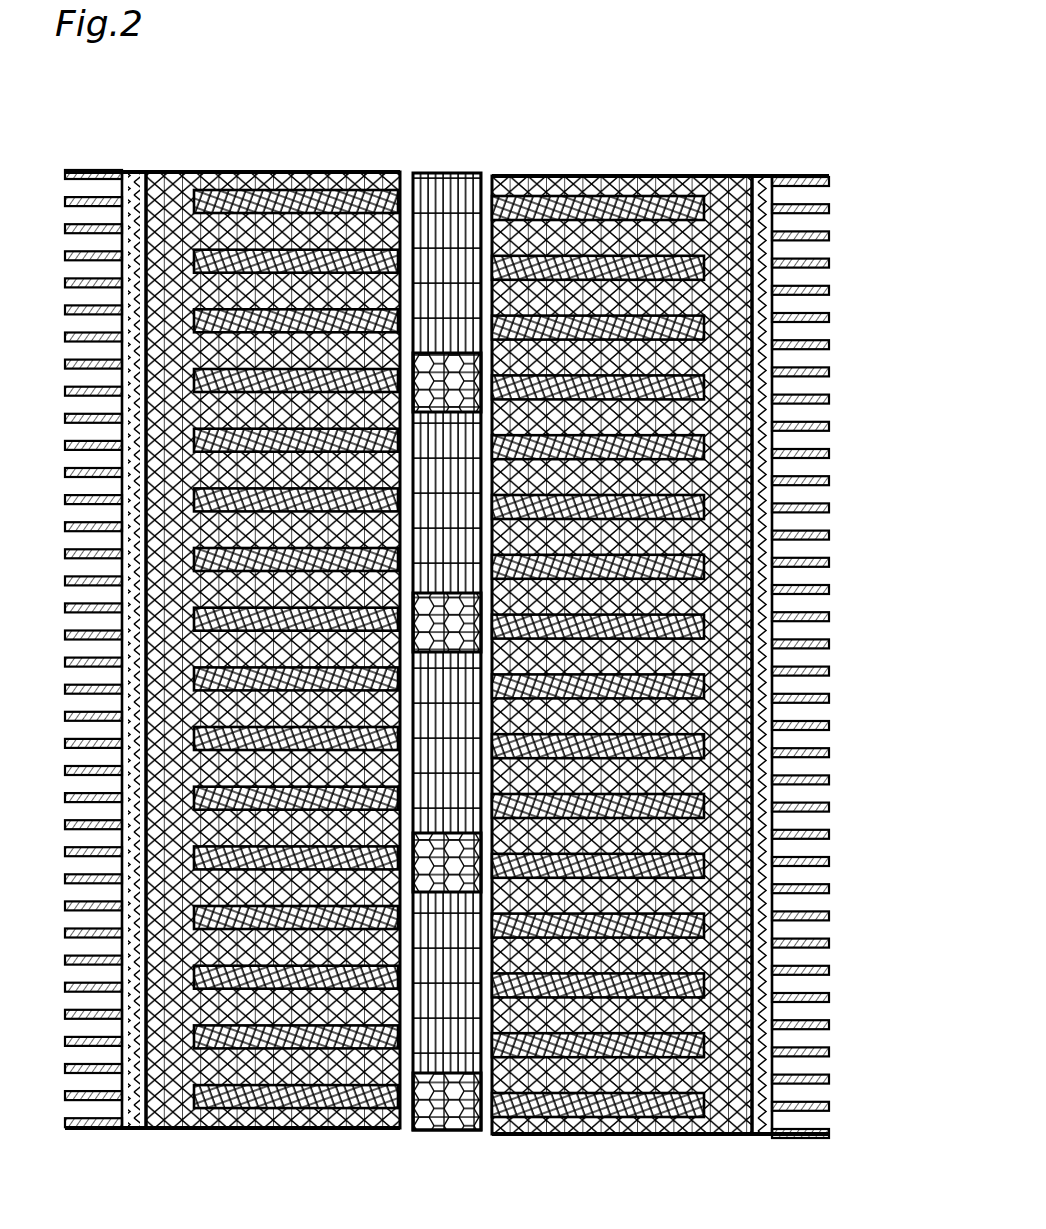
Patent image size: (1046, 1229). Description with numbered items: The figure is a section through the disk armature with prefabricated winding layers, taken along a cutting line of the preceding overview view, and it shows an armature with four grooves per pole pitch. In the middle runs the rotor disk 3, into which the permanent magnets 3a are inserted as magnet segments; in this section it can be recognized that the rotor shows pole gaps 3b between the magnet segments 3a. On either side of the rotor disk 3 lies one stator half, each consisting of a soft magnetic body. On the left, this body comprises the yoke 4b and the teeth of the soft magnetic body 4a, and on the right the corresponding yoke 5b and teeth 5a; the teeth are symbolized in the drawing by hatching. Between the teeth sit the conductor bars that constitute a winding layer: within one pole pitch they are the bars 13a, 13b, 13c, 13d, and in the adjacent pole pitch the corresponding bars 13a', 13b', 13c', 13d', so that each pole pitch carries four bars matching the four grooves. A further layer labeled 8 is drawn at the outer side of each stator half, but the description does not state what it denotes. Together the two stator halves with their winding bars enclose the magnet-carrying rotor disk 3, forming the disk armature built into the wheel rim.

The rotor disk 3 is at (446, 162).
The permanent magnets 3a is at (441, 208).
The pole gaps 3b is at (438, 1132).
The teeth of the soft magnetic body 4a is at (300, 173).
The yoke 4b is at (190, 173).
The teeth of the soft magnetic body 5a is at (583, 175).
The yoke 5b is at (753, 176).
The plate 8 is at (141, 173).
The bar 13a is at (840, 334).
The bar 13b is at (841, 395).
The bar 13c is at (839, 457).
The bar 13d is at (841, 518).
The bar of the adjacent pole pitch 13a' is at (845, 580).
The bar of the adjacent pole pitch 13b' is at (845, 640).
The bar of the adjacent pole pitch 13c' is at (844, 700).
The bar of the adjacent pole pitch 13d' is at (845, 760).